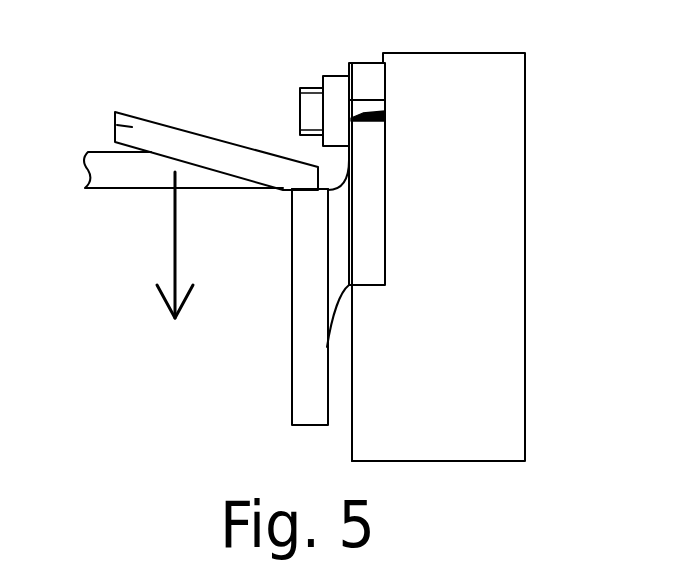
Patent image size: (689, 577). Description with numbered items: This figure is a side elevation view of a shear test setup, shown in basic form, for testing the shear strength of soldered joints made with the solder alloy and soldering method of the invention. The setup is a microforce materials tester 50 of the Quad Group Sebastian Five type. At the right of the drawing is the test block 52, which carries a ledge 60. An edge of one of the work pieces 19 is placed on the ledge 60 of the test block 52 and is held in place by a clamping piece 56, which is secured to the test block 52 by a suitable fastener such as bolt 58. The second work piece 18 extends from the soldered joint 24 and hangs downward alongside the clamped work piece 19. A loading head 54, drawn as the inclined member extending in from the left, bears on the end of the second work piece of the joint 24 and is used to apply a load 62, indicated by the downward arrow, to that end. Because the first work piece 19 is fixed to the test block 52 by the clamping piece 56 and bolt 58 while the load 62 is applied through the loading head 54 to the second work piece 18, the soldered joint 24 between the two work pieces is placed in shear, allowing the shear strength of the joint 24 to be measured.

The microforce materials tester 50 is at (221, 61).
The test block 52 is at (500, 291).
The work piece 19 is at (368, 222).
The ledge 60 is at (367, 287).
The bolt 58 is at (366, 103).
The clamping piece 56 is at (336, 80).
The loading head 54 is at (116, 121).
The load 62 is at (175, 250).
The work piece 18 is at (307, 352).
The joint 24 is at (338, 243).